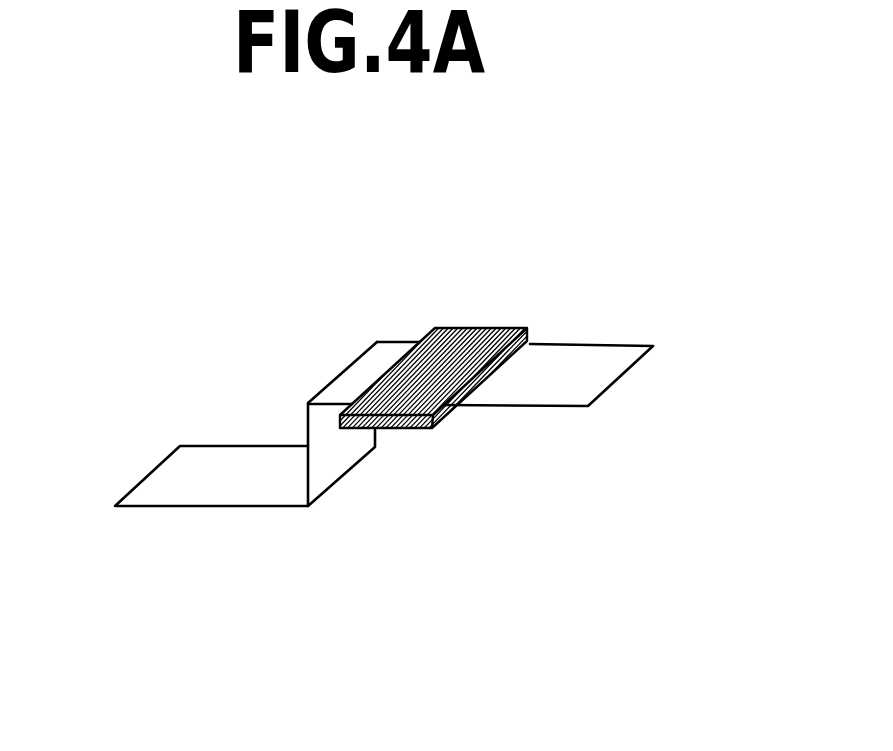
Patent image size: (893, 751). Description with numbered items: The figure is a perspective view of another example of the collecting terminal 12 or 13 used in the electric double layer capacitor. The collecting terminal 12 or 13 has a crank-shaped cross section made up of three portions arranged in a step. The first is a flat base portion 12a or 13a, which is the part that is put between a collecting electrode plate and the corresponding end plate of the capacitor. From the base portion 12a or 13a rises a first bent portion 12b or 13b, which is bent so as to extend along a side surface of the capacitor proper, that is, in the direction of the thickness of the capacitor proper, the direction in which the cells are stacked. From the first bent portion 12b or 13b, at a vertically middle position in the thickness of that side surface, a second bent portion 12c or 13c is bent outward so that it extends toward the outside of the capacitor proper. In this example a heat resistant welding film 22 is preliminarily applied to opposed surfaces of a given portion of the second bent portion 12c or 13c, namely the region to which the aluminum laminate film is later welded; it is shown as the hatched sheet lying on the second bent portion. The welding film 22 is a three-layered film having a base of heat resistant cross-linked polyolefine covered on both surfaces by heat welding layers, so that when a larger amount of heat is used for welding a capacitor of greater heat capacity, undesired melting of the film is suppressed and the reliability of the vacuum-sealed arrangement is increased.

The collecting terminal 12 is at (415, 353).
The collecting terminal 13 is at (415, 353).
The base portion 12a is at (190, 431).
The base portion 13a is at (188, 478).
The first bent portion 12b is at (454, 430).
The first bent portion 13b is at (335, 463).
The second bent portion 12c is at (601, 317).
The second bent portion 13c is at (573, 365).
The heat resistant welding film 22 is at (460, 337).